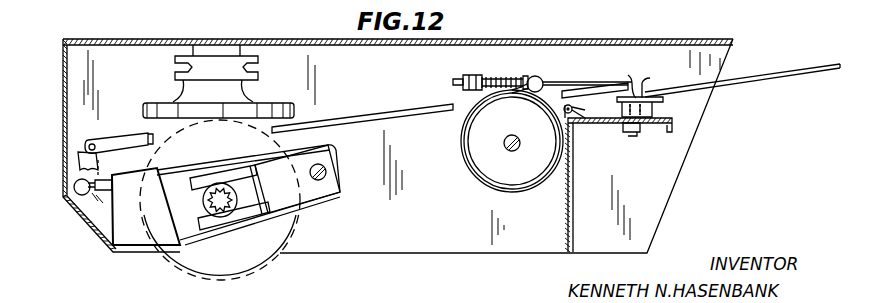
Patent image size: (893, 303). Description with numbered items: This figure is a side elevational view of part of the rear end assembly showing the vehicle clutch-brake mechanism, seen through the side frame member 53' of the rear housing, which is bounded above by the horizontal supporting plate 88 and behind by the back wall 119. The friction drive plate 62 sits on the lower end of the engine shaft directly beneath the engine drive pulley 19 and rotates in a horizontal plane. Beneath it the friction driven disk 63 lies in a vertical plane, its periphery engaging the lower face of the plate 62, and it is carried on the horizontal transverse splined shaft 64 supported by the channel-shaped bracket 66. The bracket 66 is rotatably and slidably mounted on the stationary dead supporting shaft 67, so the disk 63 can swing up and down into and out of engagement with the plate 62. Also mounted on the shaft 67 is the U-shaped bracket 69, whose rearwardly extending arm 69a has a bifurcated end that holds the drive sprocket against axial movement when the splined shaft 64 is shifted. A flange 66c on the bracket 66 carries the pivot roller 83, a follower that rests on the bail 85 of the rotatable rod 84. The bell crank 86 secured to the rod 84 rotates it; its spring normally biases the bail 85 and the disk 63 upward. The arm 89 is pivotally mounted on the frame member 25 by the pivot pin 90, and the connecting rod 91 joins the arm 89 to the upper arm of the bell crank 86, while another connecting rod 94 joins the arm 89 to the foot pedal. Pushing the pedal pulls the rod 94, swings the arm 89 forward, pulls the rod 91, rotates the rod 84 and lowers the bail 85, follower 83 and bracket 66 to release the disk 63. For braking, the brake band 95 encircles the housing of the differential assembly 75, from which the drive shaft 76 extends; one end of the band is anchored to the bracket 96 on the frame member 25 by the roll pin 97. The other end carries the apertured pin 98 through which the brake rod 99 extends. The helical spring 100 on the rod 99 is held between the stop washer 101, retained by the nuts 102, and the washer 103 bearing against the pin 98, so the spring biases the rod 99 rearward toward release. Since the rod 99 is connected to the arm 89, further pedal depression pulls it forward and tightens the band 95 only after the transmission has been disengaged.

The engine drive pulley 19 is at (176, 61).
The frame member 25 is at (675, 125).
The side frame member 53' is at (398, 146).
The friction drive plate 62 is at (160, 104).
The friction driven disk 63 is at (225, 279).
The splined shaft 64 is at (212, 201).
The bracket 66 is at (202, 170).
The flange 66c is at (112, 226).
The dead supporting shaft 67 is at (327, 172).
The U-shaped bracket 69 is at (298, 183).
The rearwardly extending arm 69a is at (250, 208).
The differential assembly 75 is at (498, 170).
The drive shaft 76 is at (508, 139).
The pivot roller 83 is at (107, 155).
The rotatable rod 84 is at (74, 188).
The bail 85 is at (112, 192).
The bell crank 86 is at (78, 158).
The horizontal supporting plate 88 is at (296, 40).
The arm 89 is at (664, 99).
The pivot pin 90 is at (633, 137).
The connecting rod 91 is at (375, 122).
The connecting rod 94 is at (760, 73).
The brake band 95 is at (463, 160).
The bracket 96 is at (573, 109).
The roll pin 97 is at (564, 109).
The apertured pin 98 is at (546, 85).
The brake rod 99 is at (576, 92).
The helical spring 100 is at (516, 78).
The stop washer 101 is at (455, 86).
The nuts 102 is at (471, 78).
The washer 103 is at (537, 76).
The back wall 119 is at (63, 104).